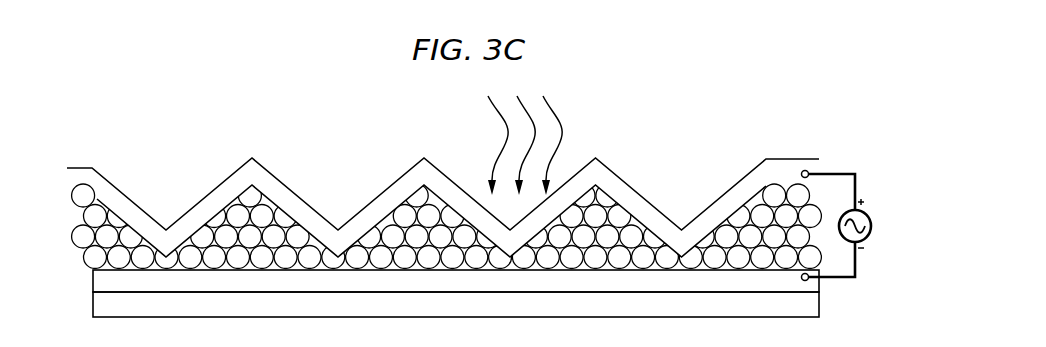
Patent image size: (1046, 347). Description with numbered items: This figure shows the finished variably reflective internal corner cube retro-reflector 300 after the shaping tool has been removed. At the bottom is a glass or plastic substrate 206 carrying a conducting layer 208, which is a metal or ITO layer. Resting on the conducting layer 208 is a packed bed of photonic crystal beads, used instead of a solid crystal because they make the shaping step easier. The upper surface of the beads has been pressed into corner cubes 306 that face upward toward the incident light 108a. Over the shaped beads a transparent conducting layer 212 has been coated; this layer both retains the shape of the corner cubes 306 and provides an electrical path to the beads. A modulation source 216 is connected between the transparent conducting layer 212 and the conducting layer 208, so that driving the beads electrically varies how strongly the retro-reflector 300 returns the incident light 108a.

The incident light 108a is at (563, 133).
The variably reflective internal corner cube retro-reflector 300 is at (789, 142).
The transparent conducting layer 212 is at (718, 215).
The corner cubes 306 is at (344, 226).
The conducting layer 208 is at (92, 281).
The substrate 206 is at (92, 308).
The modulation source 216 is at (852, 208).